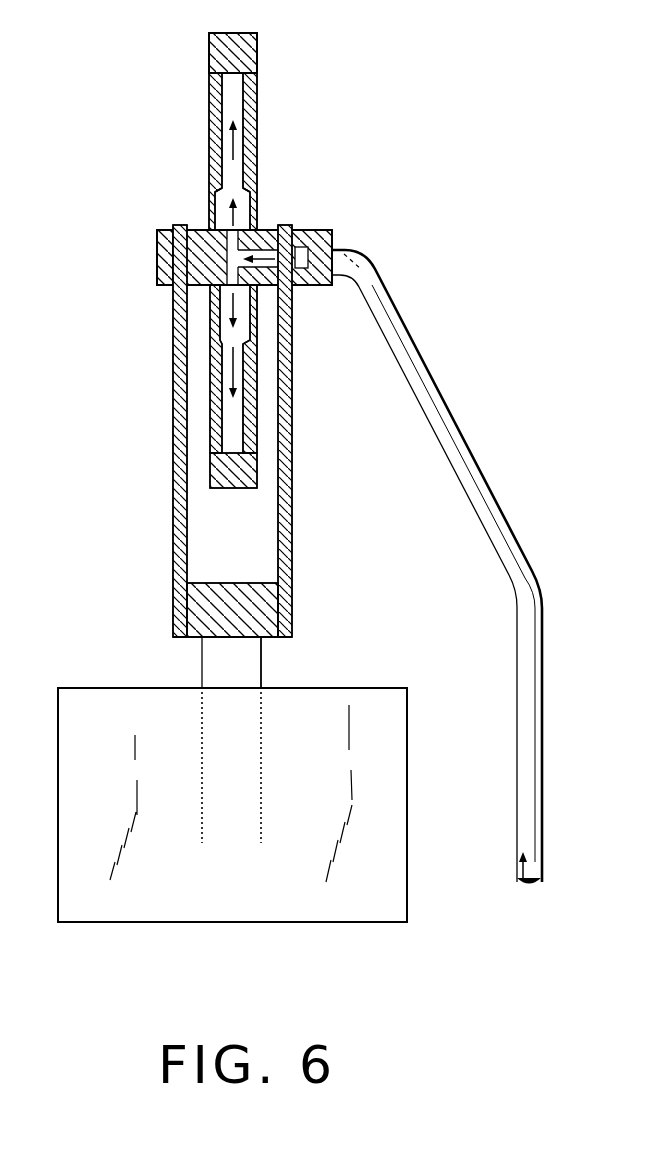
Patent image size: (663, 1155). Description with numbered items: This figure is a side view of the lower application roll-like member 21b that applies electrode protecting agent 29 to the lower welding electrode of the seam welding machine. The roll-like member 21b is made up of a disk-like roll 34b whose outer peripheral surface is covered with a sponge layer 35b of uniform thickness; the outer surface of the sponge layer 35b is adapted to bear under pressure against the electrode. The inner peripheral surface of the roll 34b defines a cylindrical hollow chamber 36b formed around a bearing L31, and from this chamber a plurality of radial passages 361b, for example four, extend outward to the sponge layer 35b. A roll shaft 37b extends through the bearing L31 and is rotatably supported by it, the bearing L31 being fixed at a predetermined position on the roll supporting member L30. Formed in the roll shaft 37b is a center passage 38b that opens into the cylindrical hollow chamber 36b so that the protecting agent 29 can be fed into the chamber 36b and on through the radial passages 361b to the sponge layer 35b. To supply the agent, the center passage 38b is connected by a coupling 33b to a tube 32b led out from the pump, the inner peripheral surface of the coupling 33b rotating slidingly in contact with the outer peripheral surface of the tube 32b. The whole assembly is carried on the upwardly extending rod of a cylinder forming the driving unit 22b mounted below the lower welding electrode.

The lower application roll-like member 21b is at (200, 69).
The sponge layer 35b is at (259, 52).
The radial passages 361b is at (230, 103).
The roll 34b is at (258, 118).
The cylindrical hollow chamber 36b is at (227, 202).
The center passage 38b is at (298, 256).
The roll shaft 37b is at (157, 262).
The coupling 33b is at (333, 237).
The bearing L31 is at (173, 395).
The roll supporting member L30 is at (293, 540).
The tube 32b is at (438, 407).
The electrode protecting agent 29 is at (522, 884).
The driving unit 22b is at (117, 700).